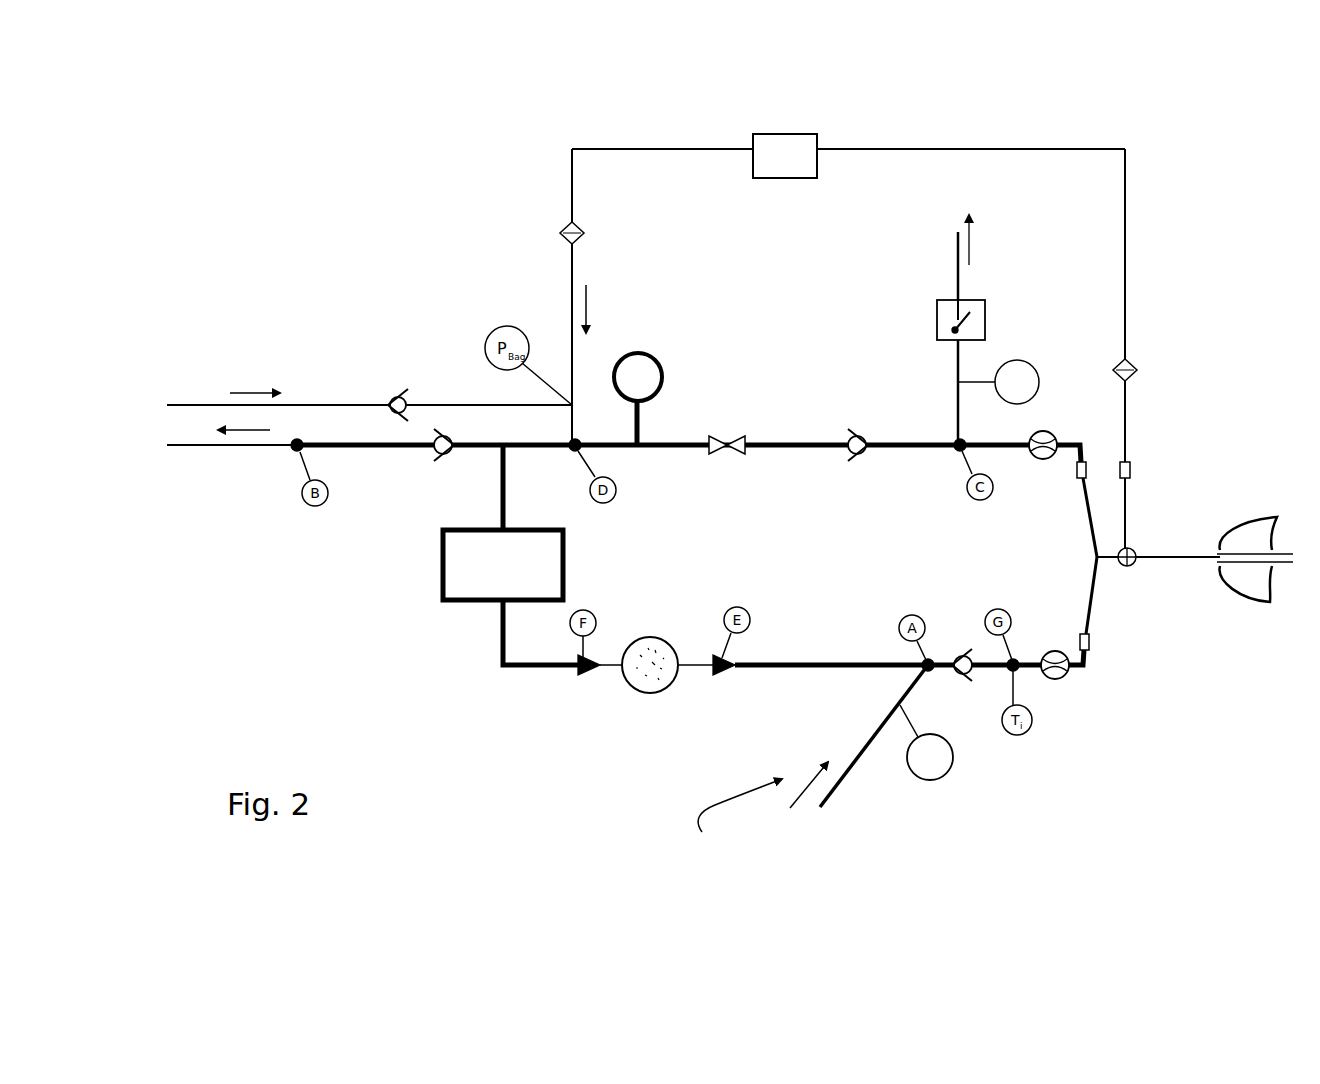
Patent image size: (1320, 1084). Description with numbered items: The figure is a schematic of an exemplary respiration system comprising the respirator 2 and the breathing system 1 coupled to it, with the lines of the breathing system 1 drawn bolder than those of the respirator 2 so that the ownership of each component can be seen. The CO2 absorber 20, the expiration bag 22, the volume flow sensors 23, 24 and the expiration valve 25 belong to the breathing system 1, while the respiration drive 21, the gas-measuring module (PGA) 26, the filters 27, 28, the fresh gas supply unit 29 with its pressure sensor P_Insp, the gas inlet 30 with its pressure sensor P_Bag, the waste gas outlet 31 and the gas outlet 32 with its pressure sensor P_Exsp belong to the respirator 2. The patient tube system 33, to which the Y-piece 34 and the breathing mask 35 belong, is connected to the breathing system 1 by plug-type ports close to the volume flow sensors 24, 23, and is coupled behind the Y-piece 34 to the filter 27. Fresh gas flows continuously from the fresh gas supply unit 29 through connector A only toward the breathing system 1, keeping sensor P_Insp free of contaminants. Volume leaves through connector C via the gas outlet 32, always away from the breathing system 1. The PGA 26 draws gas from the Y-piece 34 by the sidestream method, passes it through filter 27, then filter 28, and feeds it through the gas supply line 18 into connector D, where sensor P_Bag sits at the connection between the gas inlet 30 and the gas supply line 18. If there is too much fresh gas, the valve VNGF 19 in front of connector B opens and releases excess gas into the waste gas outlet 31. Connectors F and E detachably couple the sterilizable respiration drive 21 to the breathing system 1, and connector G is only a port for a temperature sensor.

The breathing system 1 is at (485, 646).
The respirator 2 is at (453, 356).
The gas supply line 18 is at (572, 315).
The valve VNGF 19 is at (435, 465).
The CO2 absorber 20 is at (443, 590).
The respiration drive 21 is at (678, 682).
The expiration bag 22 is at (660, 370).
The volume flow sensor 23 is at (1065, 675).
The volume flow sensor 24 is at (1055, 435).
The expiration valve 25 is at (740, 440).
The gas-measuring module (PGA) 26 is at (795, 178).
The filter 27 is at (1130, 365).
The filter 28 is at (562, 230).
The fresh gas supply unit 29 is at (845, 780).
The gas inlet 30 is at (335, 405).
The waste gas outlet 31 is at (230, 450).
The gas outlet 32 is at (958, 415).
The patient tube system 33 is at (1090, 605).
The Y-piece 34 is at (1100, 560).
The breathing mask 35 is at (1250, 600).